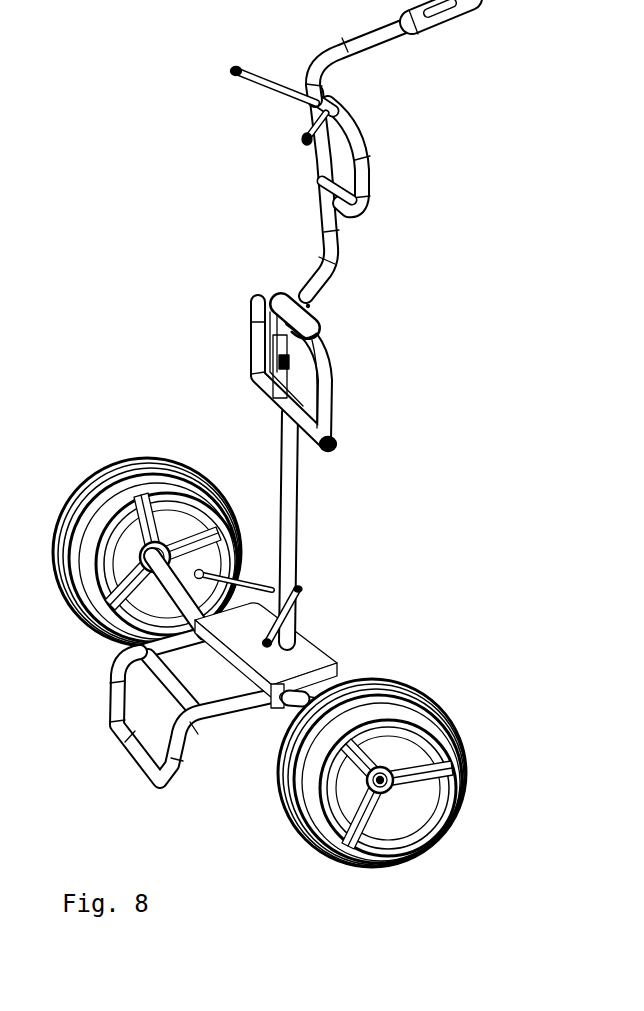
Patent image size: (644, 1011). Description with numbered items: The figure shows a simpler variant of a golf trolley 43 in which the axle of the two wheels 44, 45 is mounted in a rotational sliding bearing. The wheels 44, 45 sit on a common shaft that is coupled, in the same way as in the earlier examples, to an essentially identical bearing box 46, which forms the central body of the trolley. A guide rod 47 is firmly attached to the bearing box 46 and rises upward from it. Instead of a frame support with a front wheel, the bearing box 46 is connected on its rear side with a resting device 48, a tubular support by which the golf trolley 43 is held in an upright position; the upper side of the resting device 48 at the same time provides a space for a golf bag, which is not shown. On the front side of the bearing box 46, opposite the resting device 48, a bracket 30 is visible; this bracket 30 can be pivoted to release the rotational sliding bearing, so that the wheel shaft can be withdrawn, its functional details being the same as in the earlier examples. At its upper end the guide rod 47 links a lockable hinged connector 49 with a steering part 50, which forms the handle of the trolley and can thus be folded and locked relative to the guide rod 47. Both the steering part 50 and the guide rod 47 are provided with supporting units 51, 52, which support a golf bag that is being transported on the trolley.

The bracket 30 is at (330, 693).
The golf trolley 43 is at (275, 433).
The wheel 44 is at (130, 482).
The wheel 45 is at (450, 737).
The bearing box 46 is at (316, 655).
The guide rod 47 is at (290, 483).
The resting device 48 is at (113, 698).
The lockable hinged connector 49 is at (362, 357).
The steering part 50 is at (383, 35).
The supporting unit 51 is at (257, 85).
The supporting unit 52 is at (297, 612).